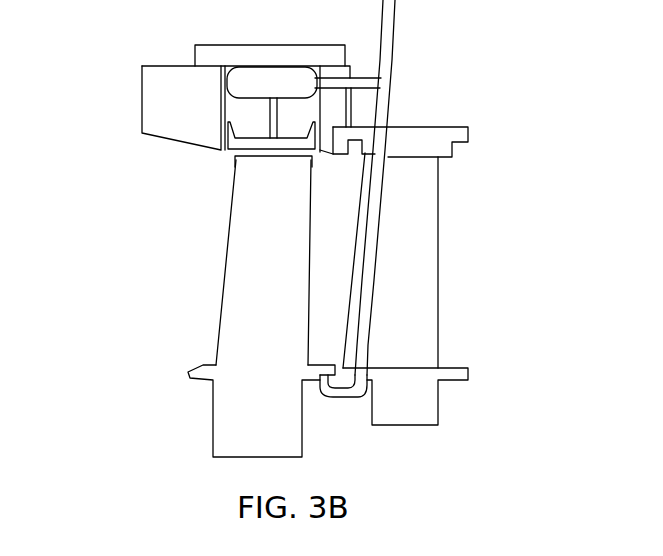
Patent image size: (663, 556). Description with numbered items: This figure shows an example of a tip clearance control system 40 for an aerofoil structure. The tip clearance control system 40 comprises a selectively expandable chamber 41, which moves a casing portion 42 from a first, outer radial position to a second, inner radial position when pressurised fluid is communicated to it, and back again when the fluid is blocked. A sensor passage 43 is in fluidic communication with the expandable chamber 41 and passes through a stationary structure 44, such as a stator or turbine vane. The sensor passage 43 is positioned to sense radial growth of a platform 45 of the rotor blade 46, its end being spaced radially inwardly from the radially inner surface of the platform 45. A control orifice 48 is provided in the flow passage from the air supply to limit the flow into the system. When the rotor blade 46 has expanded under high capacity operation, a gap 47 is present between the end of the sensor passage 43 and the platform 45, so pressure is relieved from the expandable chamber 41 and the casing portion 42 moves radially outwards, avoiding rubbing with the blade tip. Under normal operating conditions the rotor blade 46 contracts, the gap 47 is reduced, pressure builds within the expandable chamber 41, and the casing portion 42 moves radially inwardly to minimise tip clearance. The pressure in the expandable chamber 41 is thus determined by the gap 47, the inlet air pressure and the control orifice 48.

The tip clearance control system 40 is at (101, 214).
The selectively expandable chamber 41 is at (227, 65).
The casing portion 42 is at (280, 148).
The sensor passage 43 is at (387, 121).
The stationary structure 44 is at (425, 331).
The platform 45 is at (325, 368).
The rotor blade 46 is at (233, 323).
The gap 47 is at (337, 393).
The control orifice 48 is at (392, 57).